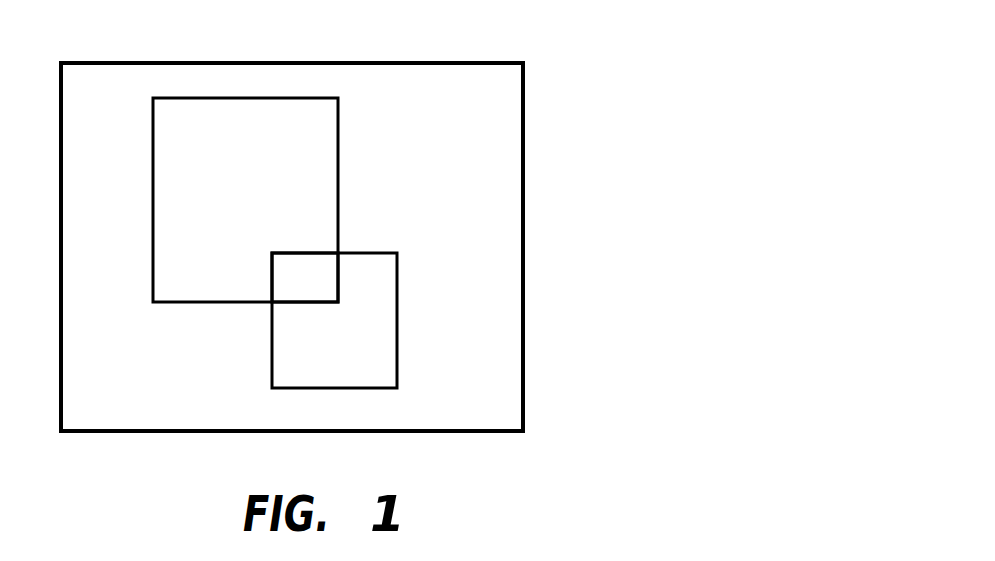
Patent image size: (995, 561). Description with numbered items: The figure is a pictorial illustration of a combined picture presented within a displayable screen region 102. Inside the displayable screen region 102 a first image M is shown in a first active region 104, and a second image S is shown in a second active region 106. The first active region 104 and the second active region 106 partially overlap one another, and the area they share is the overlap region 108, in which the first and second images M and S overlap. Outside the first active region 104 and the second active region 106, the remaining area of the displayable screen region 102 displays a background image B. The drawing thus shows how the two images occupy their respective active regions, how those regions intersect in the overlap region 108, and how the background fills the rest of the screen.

The displayable screen region 102 is at (528, 83).
The first active region 104 is at (168, 304).
The second active region 106 is at (399, 300).
The overlap region 108 is at (272, 267).